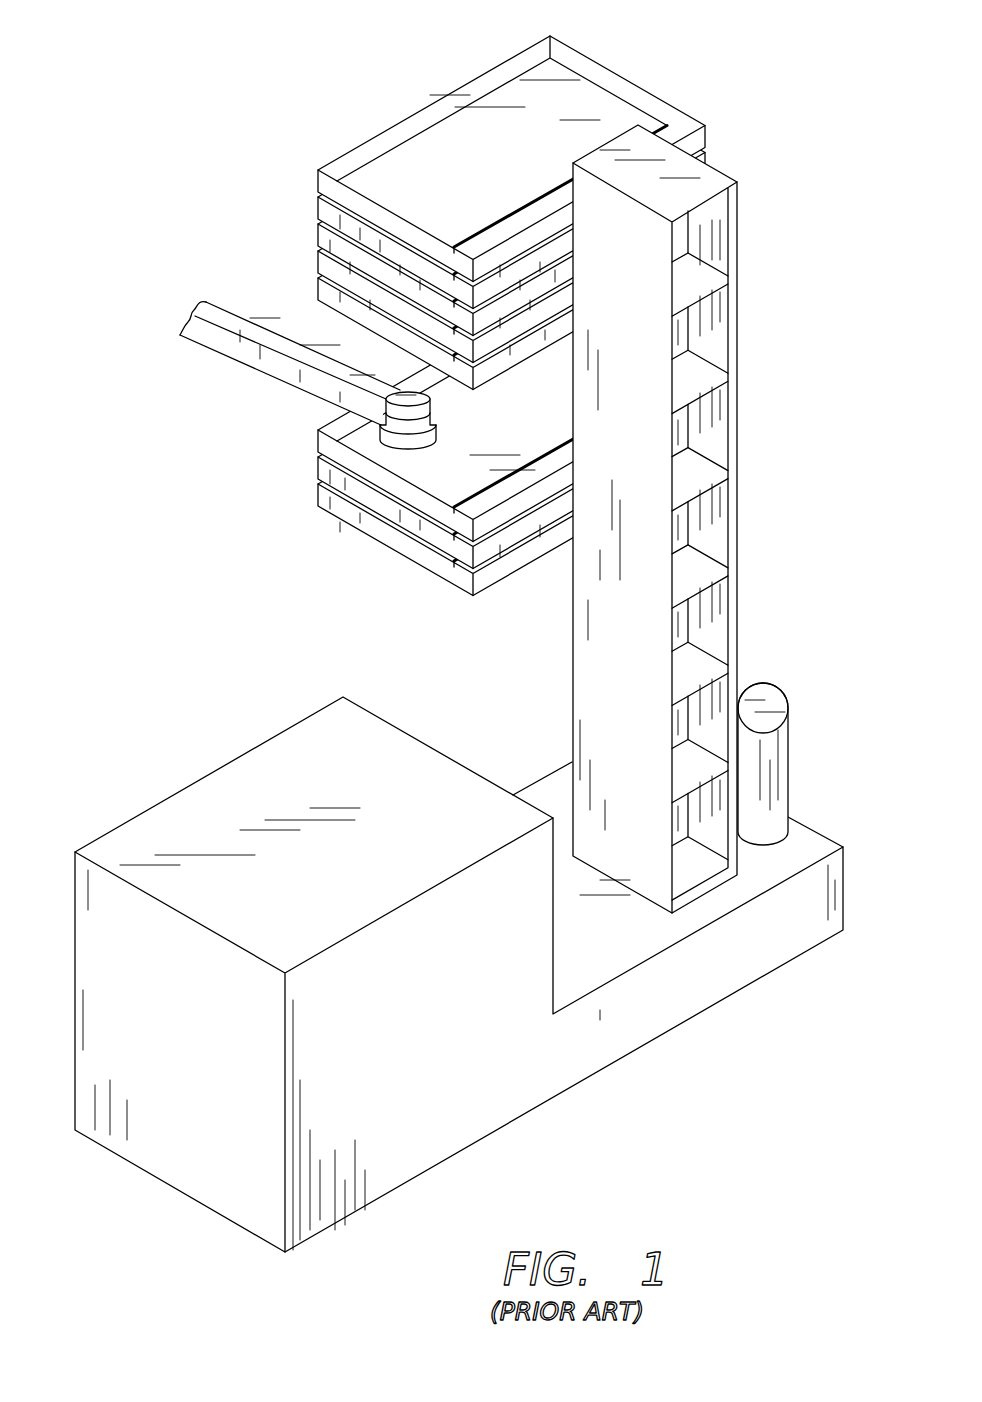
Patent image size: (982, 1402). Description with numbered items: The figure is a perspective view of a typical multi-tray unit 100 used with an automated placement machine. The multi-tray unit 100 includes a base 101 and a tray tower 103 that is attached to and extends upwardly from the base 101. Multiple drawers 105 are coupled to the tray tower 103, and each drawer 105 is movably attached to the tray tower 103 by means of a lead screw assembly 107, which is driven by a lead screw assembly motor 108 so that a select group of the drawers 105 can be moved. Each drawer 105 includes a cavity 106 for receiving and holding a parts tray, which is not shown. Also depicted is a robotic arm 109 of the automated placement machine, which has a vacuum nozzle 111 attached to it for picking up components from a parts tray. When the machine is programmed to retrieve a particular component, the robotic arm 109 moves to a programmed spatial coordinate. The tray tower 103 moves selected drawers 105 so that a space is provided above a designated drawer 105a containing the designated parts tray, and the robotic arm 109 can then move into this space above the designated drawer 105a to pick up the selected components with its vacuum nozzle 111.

The multi-tray unit 100 is at (150, 70).
The base 101 is at (298, 750).
The tray tower 103 is at (707, 177).
The drawers 105 is at (487, 195).
The designated drawer 105a is at (313, 429).
The cavity 106 is at (493, 102).
The lead screw assembly 107 is at (712, 375).
The lead screw assembly motor 108 is at (760, 700).
The robotic arm 109 is at (243, 308).
The vacuum nozzle 111 is at (400, 390).